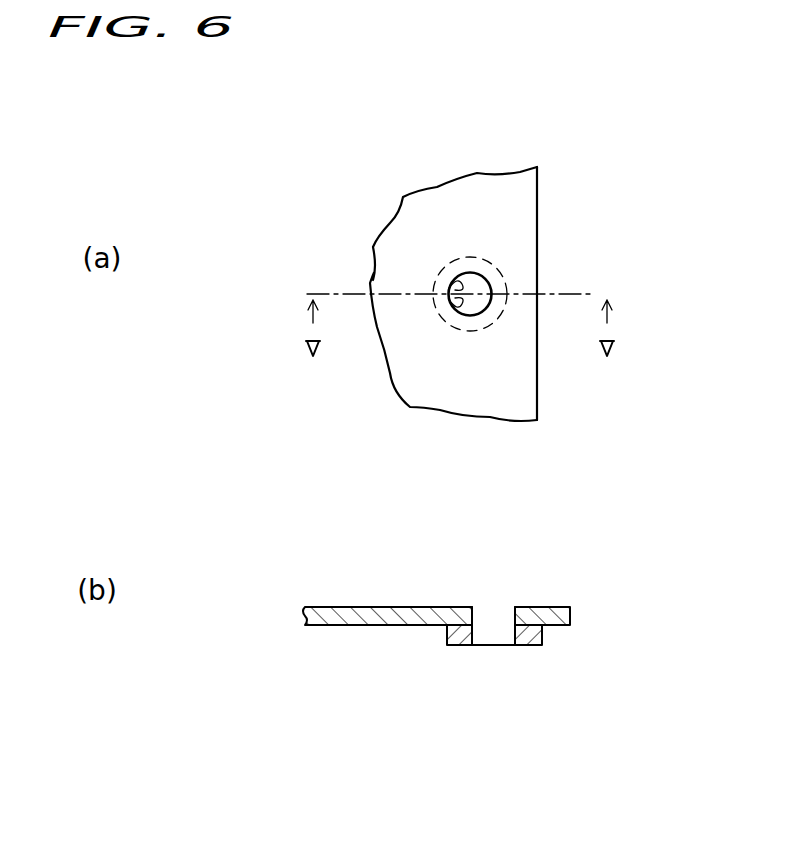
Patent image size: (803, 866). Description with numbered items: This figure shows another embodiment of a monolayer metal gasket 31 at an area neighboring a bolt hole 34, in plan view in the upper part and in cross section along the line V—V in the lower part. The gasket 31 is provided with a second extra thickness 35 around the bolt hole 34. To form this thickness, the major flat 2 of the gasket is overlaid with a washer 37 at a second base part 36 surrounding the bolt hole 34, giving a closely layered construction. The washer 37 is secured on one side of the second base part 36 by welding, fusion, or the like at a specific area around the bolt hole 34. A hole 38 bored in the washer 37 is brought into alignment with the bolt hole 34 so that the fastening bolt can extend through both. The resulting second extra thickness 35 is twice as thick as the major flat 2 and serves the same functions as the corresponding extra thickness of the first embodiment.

The major flat 2 is at (500, 220).
The monolayer metal gasket 31 is at (432, 176).
The bolt hole 34 is at (449, 283).
The second extra thickness 35 is at (478, 336).
The second base part 36 is at (491, 276).
The washer 37 is at (493, 315).
The hole 38 is at (457, 320).